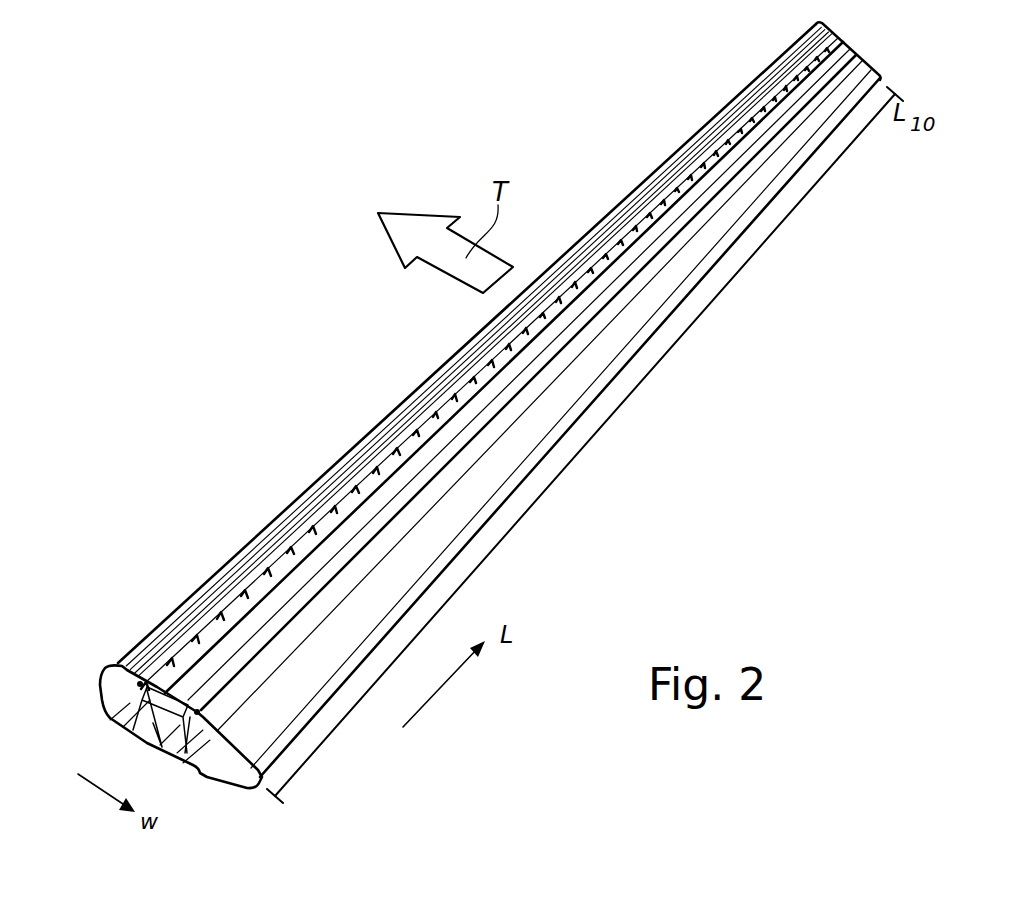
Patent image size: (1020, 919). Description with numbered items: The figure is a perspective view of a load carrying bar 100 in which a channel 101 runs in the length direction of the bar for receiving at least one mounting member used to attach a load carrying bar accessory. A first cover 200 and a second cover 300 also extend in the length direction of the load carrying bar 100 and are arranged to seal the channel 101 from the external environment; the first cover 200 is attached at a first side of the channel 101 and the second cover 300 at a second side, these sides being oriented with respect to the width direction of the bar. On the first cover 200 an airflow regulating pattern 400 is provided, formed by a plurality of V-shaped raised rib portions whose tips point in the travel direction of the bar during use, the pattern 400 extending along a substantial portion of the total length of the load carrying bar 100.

The load carrying bar 100 is at (176, 568).
The channel 101 is at (160, 745).
The first cover 200 is at (172, 670).
The second cover 300 is at (281, 722).
The airflow regulating pattern 400 is at (244, 588).